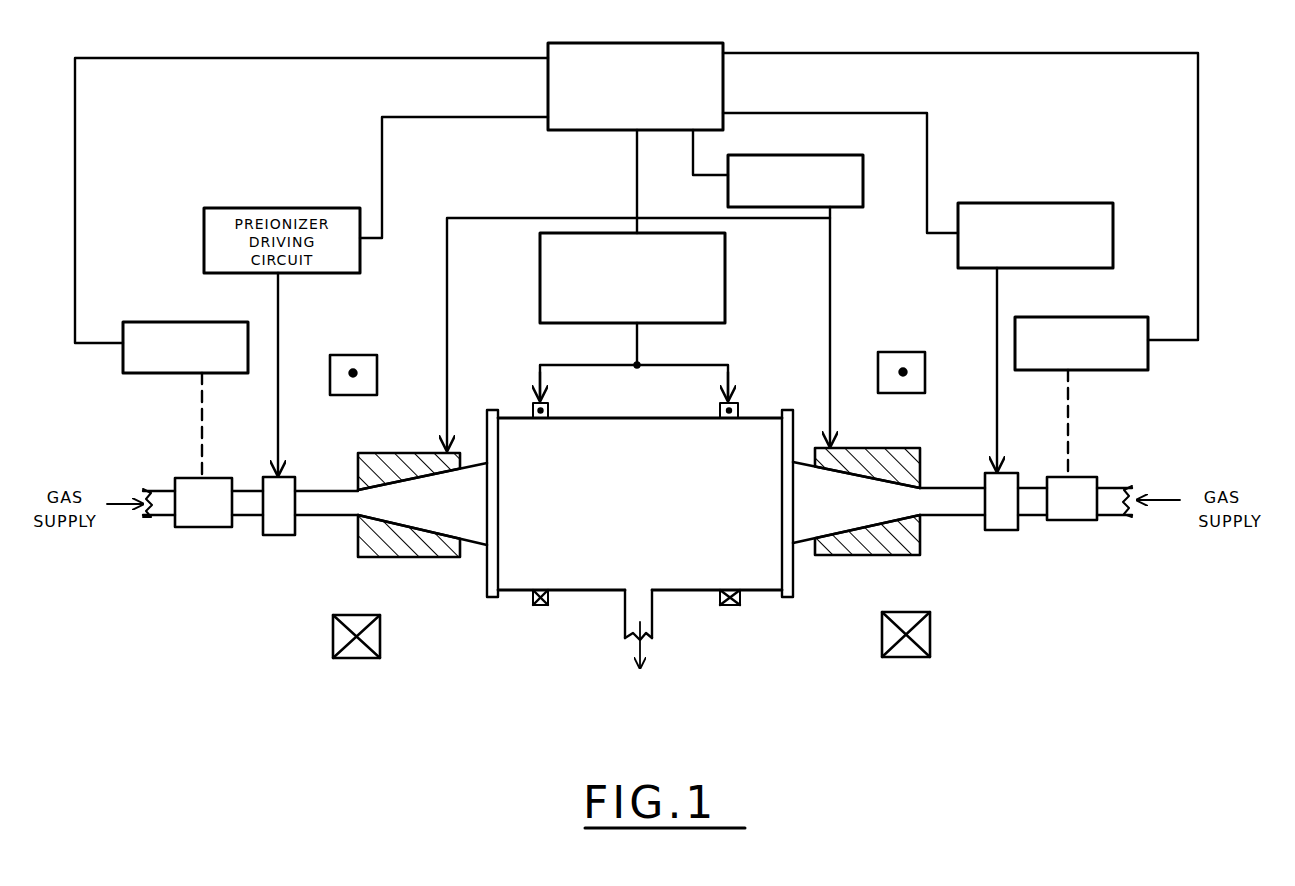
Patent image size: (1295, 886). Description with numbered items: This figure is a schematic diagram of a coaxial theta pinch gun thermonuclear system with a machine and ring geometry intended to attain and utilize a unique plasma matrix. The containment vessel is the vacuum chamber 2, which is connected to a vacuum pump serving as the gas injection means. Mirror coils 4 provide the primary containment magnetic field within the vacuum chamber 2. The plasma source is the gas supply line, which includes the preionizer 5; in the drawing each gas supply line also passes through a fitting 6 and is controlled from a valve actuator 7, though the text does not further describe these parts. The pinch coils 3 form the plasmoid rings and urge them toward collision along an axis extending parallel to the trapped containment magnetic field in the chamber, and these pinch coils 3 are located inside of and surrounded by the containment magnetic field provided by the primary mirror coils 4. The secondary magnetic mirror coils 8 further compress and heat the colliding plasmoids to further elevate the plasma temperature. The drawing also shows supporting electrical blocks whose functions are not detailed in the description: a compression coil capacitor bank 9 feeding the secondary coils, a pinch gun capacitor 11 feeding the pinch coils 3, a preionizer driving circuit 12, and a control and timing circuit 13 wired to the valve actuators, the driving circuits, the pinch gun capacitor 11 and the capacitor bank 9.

The vacuum chamber 2 is at (605, 595).
The pinch coils 3 is at (358, 541).
The mirror coils 4 is at (357, 351).
The preionizer 5 is at (275, 536).
The gas supply fitting 6 is at (190, 528).
The valve actuator 7 is at (145, 322).
The secondary magnetic mirror coils 8 is at (534, 401).
The compression coil capacitor bank 9 is at (725, 272).
The pinch gun capacitor 11 is at (790, 155).
The preionizer driving circuit 12 is at (1043, 200).
The control and timing circuit 13 is at (713, 43).